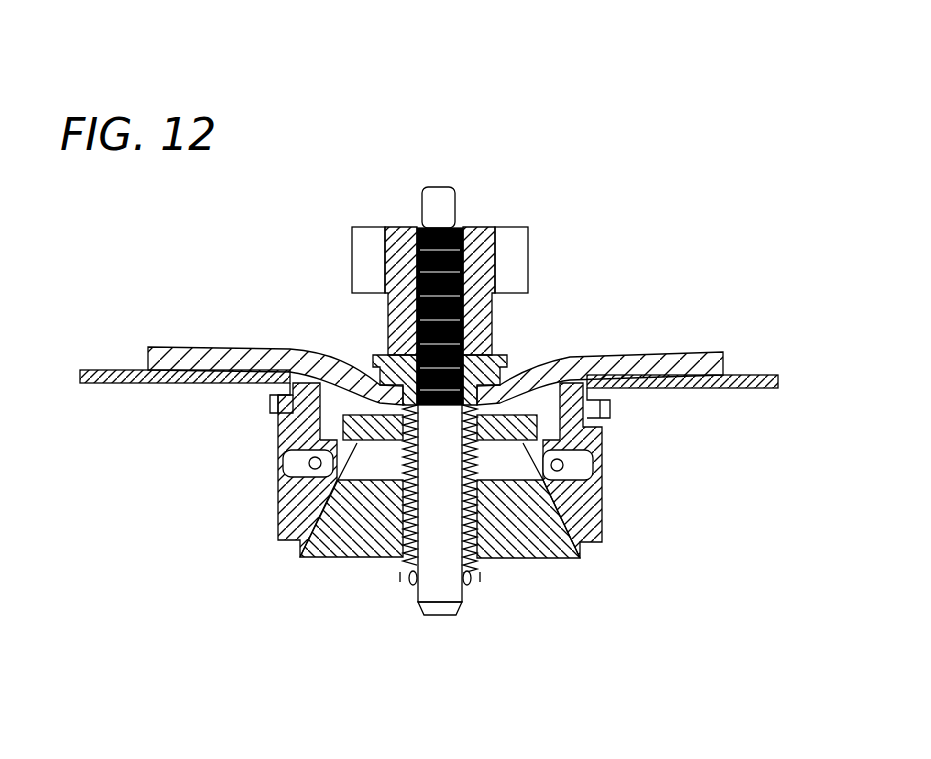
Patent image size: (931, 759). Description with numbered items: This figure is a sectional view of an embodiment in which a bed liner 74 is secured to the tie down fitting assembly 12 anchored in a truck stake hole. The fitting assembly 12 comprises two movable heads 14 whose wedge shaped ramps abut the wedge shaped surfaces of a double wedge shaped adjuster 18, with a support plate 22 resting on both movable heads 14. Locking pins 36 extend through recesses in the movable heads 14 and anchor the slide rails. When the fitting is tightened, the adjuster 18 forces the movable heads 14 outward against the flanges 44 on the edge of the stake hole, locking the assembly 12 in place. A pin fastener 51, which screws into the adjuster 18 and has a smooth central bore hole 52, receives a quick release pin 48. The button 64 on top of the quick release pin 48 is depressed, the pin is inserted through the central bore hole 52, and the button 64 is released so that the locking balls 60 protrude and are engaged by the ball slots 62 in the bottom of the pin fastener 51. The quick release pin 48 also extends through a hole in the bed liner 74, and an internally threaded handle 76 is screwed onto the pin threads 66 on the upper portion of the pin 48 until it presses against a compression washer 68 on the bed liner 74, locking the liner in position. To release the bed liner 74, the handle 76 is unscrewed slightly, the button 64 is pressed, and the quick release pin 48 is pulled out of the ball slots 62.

The tie down fitting assembly 12 is at (757, 526).
The movable heads 14 is at (278, 515).
The double wedge shaped adjuster 18 is at (562, 560).
The support plate 22 is at (548, 437).
The locking pins 36 is at (283, 463).
The flanges 44 is at (640, 388).
The quick release pin 48 is at (445, 616).
The pin fastener 51 is at (352, 350).
The central bore hole 52 is at (300, 552).
The locking balls 60 is at (410, 583).
The ball slots 62 is at (400, 578).
The button 64 is at (441, 187).
The pin threads 66 is at (407, 228).
The compression washer 68 is at (500, 355).
The bed liner 74 is at (668, 352).
The internally threaded handle 76 is at (528, 252).